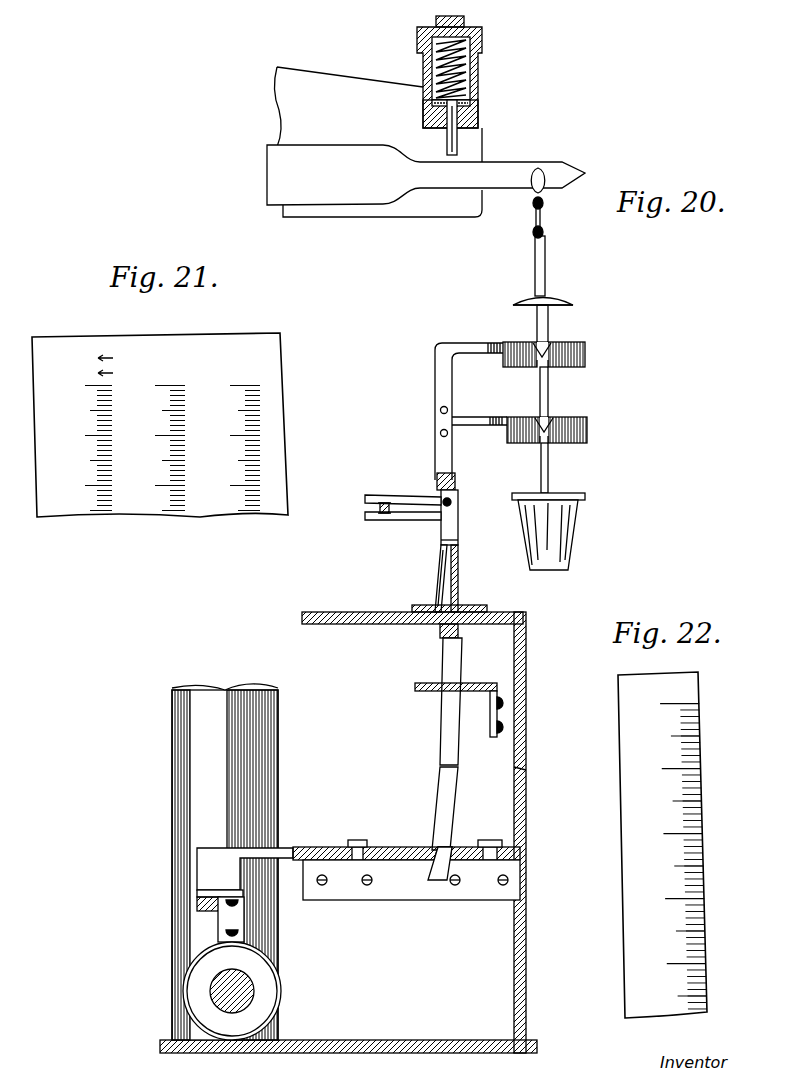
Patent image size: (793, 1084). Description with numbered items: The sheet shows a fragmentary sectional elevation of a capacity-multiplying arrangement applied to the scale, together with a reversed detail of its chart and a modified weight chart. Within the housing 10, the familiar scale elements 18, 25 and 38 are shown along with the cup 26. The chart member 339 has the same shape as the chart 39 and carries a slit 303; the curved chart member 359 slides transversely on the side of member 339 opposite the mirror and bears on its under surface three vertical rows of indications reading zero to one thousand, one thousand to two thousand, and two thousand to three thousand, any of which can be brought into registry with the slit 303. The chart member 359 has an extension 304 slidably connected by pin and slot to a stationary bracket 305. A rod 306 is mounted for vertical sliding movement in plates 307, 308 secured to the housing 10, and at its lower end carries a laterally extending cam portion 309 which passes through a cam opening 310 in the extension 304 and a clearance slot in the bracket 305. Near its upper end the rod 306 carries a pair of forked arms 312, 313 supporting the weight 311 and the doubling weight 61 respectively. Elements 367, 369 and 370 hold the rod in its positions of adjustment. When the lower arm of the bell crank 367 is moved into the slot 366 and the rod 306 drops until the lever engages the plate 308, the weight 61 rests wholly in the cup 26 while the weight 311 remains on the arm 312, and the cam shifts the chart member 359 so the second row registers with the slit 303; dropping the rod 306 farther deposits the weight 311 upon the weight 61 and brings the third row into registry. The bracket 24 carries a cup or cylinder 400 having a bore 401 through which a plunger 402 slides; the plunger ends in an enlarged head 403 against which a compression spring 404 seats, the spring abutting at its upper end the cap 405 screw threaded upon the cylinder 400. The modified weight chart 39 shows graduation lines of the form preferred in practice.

In FIG. 20, the cap 405 is at (478, 37).
In FIG. 20, the compression spring 404 is at (468, 56).
In FIG. 20, the cup or cylinder 400 is at (478, 75).
In FIG. 20, the enlarged head 403 is at (478, 104).
In FIG. 20, the bore 401 is at (478, 114).
In FIG. 20, the plunger 402 is at (458, 146).
In FIG. 20, the bracket 24 is at (347, 83).
In FIG. 20, the scale element 18 is at (358, 153).
In FIG. 20, the forked arm 312 is at (497, 342).
In FIG. 20, the weight 311 is at (586, 352).
In FIG. 20, the forked arm 313 is at (510, 418).
In FIG. 20, the doubling weight 61 is at (588, 431).
In FIG. 20, the cup 26 is at (576, 527).
In FIG. 20, the holding element 370 is at (378, 508).
In FIG. 20, the holding element 369 is at (405, 520).
In FIG. 20, the bell crank 367 is at (440, 543).
In FIG. 20, the slot 366 is at (456, 568).
In FIG. 20, the plate 307 is at (468, 606).
In FIG. 20, the rod 306 is at (447, 648).
In FIG. 20, the plate 308 is at (492, 675).
In FIG. 20, the housing 10 is at (521, 660).
In FIG. 20, the cam portion 309 is at (445, 745).
In FIG. 20, the extension 304 is at (408, 832).
In FIG. 20, the cam opening 310 is at (452, 846).
In FIG. 20, the stationary bracket 305 is at (410, 893).
In FIG. 20, the scale element 25 is at (183, 775).
In FIG. 20, the chart member 359 is at (197, 876).
In FIG. 21, the chart member 359 is at (272, 352).
In FIG. 20, the slit 303 is at (200, 907).
In FIG. 20, the chart member 339 is at (222, 930).
In FIG. 20, the scale element 38 is at (232, 942).
In FIG. 22, the weight chart 39 is at (695, 684).